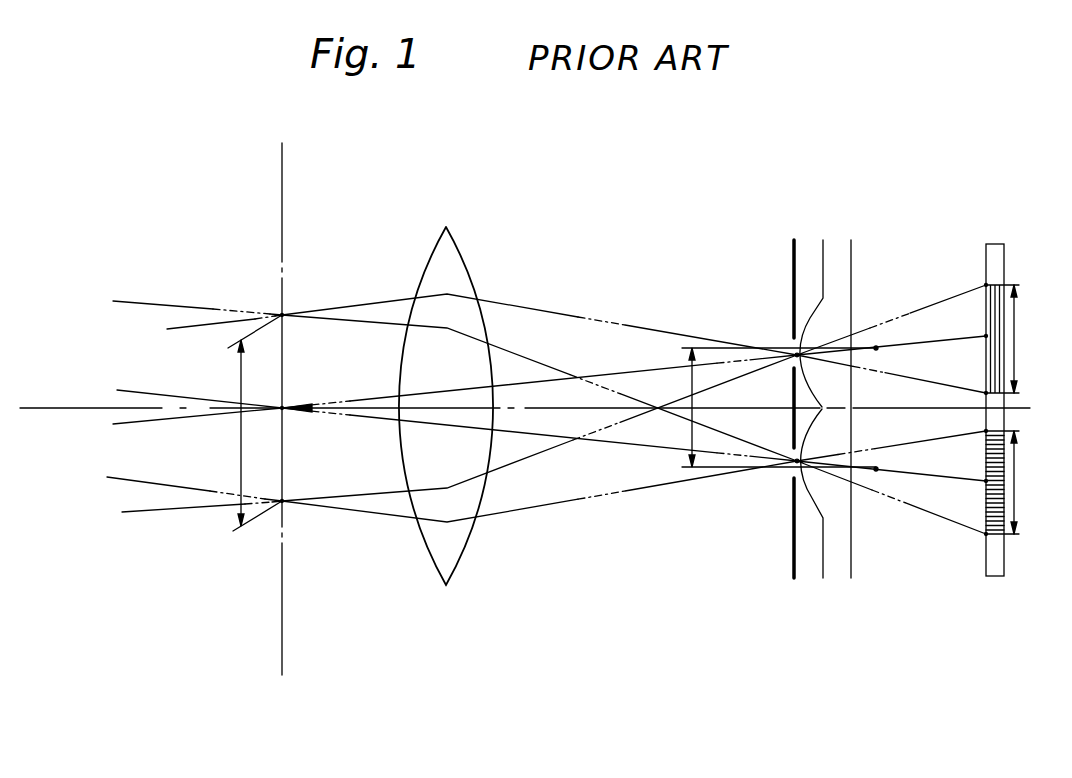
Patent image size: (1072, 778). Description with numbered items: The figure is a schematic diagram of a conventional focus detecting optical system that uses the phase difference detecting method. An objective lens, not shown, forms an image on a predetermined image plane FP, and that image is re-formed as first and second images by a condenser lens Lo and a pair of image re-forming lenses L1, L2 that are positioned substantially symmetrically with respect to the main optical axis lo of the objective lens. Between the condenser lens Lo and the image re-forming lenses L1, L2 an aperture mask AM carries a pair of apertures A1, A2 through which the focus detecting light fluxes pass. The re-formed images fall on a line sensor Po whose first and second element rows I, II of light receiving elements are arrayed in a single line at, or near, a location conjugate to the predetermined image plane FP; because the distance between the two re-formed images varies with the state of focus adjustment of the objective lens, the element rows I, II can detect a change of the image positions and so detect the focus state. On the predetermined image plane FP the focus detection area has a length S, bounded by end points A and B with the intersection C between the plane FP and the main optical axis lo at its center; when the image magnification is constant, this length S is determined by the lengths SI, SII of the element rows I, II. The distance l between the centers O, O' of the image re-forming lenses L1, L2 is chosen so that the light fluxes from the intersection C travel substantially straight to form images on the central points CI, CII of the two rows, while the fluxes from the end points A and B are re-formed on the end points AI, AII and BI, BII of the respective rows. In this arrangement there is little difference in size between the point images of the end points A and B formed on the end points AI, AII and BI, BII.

The predetermined image plane FP is at (283, 168).
The end point A of focus detection area A is at (282, 315).
The end point B of focus detection area B is at (282, 501).
The intersection between predetermined image plane and main optical axis C is at (283, 407).
The length of focus detection area S is at (248, 423).
The condenser lens Lo is at (459, 247).
The distance between image re-forming lenses l is at (690, 382).
The main optical axis lo is at (541, 411).
The aperture mask AM is at (790, 263).
The aperture A1 is at (786, 468).
The aperture A2 is at (788, 351).
The image re-forming lens L1 is at (813, 497).
The image re-forming lens L2 is at (812, 318).
The center of image re-forming lens O is at (882, 362).
The center of image re-forming lens O' is at (889, 460).
The line sensor Po is at (1000, 243).
The first element row I is at (993, 535).
The second element row II is at (993, 285).
The length of first element row SI is at (1028, 482).
The length of second element row SII is at (1031, 339).
The end point of first element row AI is at (985, 534).
The end point of first element row BI is at (985, 432).
The central point of first element row CI is at (985, 481).
The end point of second element row AII is at (985, 392).
The end point of second element row BII is at (985, 285).
The central point of second element row CII is at (985, 336).